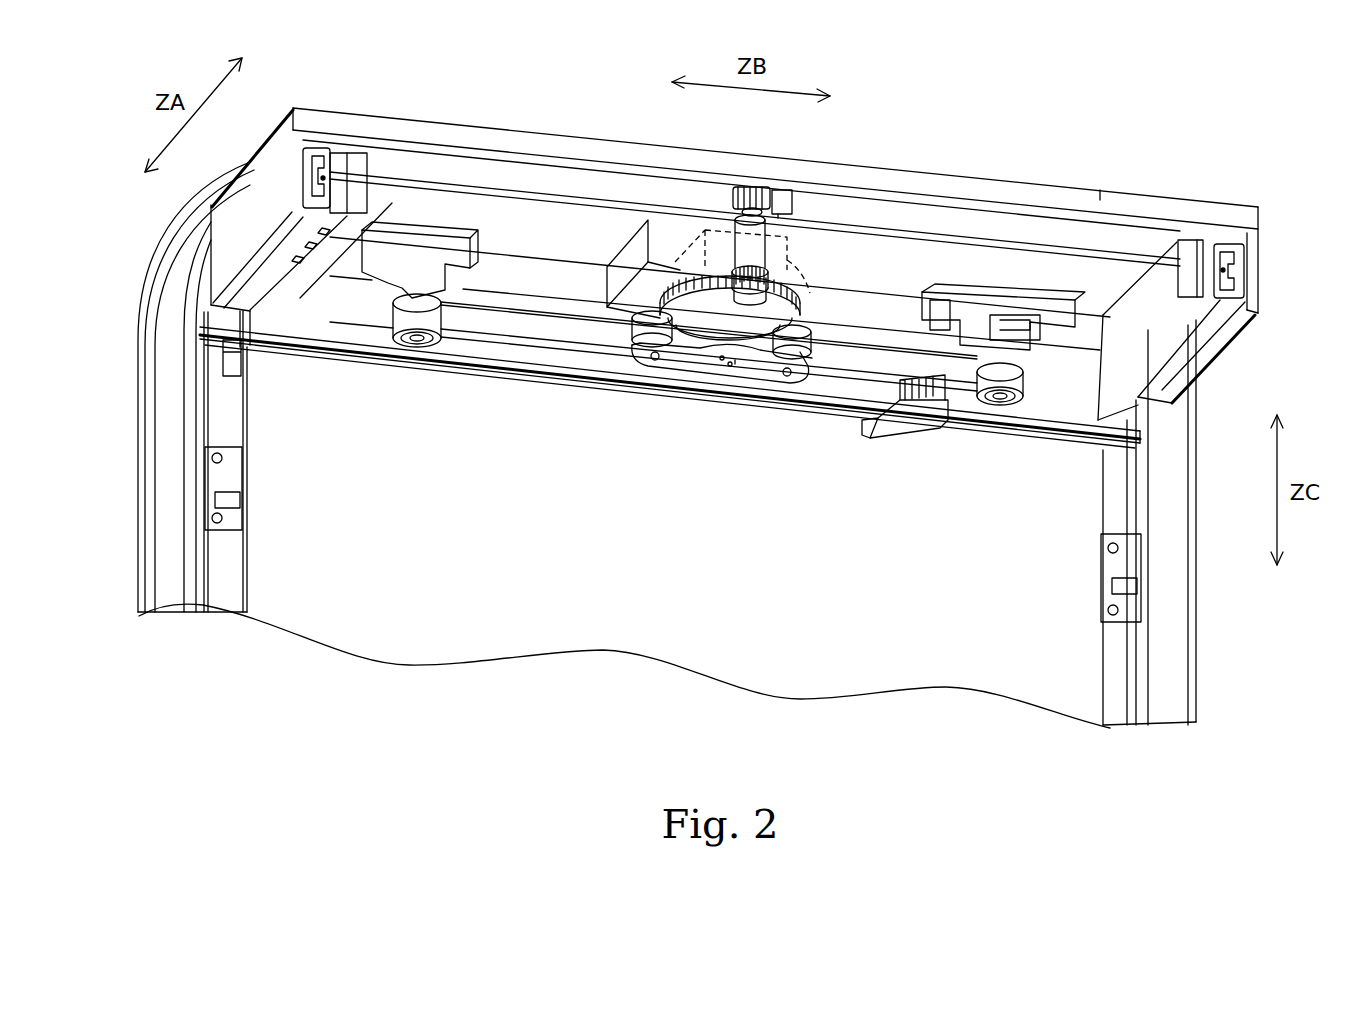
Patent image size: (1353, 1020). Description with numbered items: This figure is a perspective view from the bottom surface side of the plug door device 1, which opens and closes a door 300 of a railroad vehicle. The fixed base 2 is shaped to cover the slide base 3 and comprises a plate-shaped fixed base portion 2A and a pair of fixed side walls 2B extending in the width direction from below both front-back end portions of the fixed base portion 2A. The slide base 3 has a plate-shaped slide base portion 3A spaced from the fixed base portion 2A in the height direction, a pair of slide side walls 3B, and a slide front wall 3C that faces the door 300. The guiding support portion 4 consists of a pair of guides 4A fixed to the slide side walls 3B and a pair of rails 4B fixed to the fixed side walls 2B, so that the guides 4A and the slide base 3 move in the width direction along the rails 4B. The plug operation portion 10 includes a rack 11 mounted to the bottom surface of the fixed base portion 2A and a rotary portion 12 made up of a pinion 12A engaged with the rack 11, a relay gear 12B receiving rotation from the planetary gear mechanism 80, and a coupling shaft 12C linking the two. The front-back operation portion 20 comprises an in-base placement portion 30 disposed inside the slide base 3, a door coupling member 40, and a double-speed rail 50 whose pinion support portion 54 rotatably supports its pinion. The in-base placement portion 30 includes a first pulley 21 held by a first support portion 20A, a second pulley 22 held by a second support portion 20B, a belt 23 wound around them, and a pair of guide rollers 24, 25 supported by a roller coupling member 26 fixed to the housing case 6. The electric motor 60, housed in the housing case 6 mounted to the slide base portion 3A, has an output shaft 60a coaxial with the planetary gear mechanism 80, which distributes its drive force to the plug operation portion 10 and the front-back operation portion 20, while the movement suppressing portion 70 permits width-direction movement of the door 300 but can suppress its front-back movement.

The plug door device 1 is at (1206, 111).
The fixed base 2 is at (606, 119).
The fixed base portion 2A is at (689, 133).
The fixed side walls 2B is at (761, 254).
The slide base 3 is at (755, 218).
The slide base portion 3A is at (720, 264).
The slide side walls 3B is at (766, 221).
The slide front wall 3C is at (707, 343).
The guiding support portion 4 is at (775, 153).
The guides 4A is at (716, 304).
The rails 4B is at (776, 230).
The housing case 6 is at (632, 269).
The plug operation portion 10 is at (911, 262).
The rack 11 is at (809, 204).
The rotary portion 12 is at (684, 188).
The pinion 12A is at (753, 167).
The relay gear 12B is at (813, 299).
The coupling shaft 12C is at (795, 241).
The front-back operation portion 20 is at (571, 288).
The first support portion 20A is at (433, 254).
The second support portion 20B is at (1008, 309).
The first pulley 21 is at (411, 352).
The second pulley 22 is at (1015, 419).
The belt 23 is at (653, 366).
The guide roller 24 is at (629, 371).
The guide roller 25 is at (798, 392).
The roller coupling member 26 is at (722, 392).
The in-base placement portion 30 is at (1029, 237).
The door coupling member 40 is at (905, 432).
The double-speed rail 50 is at (670, 404).
The pinion support portion 54 is at (670, 421).
The electric motor 60 is at (753, 308).
The output shaft 60a is at (761, 436).
The movement suppressing portion 70 is at (1098, 177).
The planetary gear mechanism 80 is at (728, 255).
The door 300 is at (640, 445).